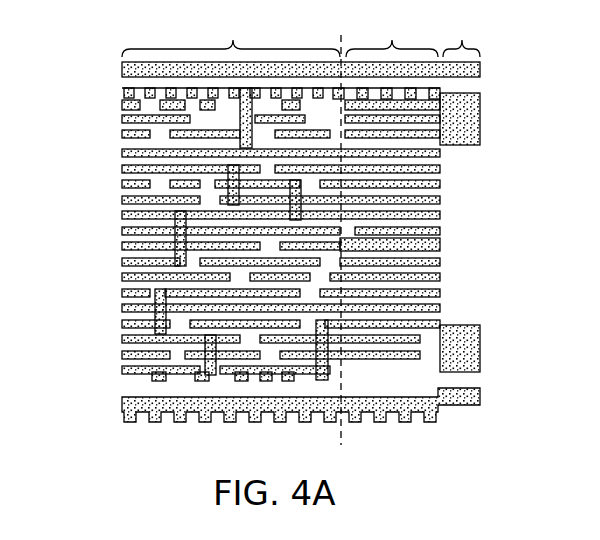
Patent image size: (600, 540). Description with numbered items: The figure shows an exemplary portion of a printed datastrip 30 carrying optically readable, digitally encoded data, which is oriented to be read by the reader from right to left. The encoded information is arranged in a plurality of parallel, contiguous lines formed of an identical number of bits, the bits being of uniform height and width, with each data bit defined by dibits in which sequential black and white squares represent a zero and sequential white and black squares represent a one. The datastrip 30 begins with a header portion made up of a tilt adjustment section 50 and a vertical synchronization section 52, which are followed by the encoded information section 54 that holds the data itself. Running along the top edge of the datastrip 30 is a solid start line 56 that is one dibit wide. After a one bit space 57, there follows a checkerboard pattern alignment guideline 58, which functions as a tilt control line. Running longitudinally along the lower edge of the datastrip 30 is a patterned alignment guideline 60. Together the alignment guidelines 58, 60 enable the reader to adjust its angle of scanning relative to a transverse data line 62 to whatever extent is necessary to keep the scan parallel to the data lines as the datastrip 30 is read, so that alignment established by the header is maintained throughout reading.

The encoded information section 54 is at (231, 31).
The transverse data line 62 is at (339, 225).
The vertical synchronization section 52 is at (392, 31).
The tilt adjustment section 50 is at (461, 31).
The solid start line 56 is at (482, 67).
The checkerboard pattern alignment guideline 58 is at (450, 89).
The one bit space 57 is at (124, 85).
The datastrip 30 is at (121, 237).
The patterned alignment guideline 60 is at (445, 412).